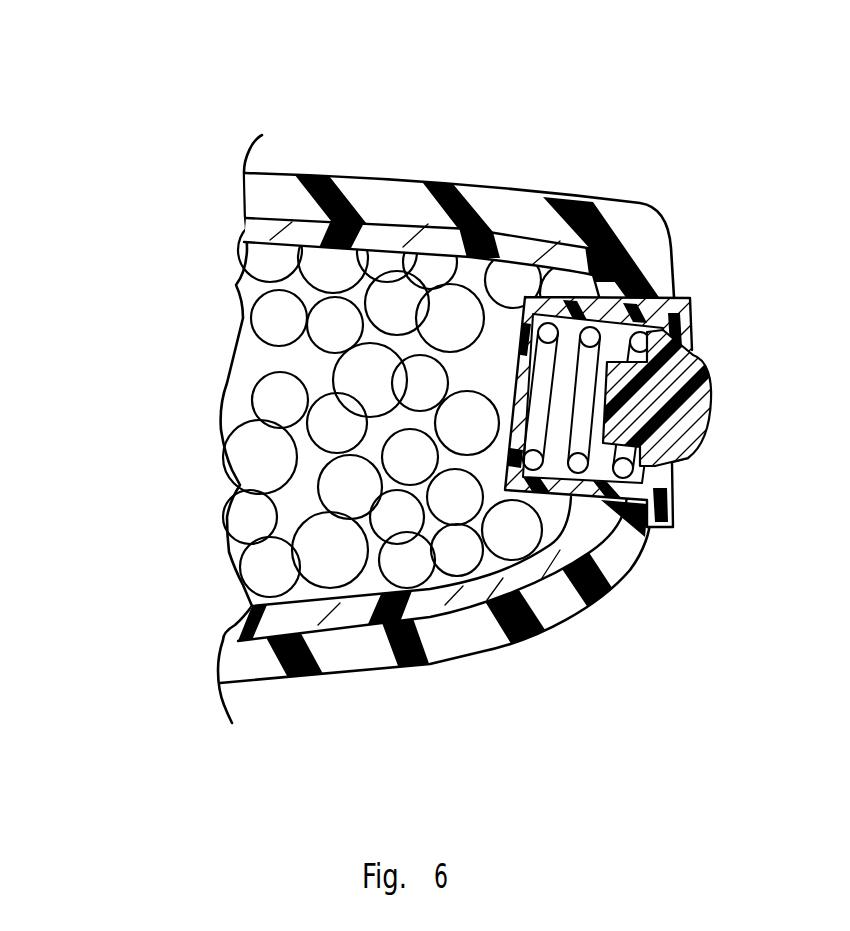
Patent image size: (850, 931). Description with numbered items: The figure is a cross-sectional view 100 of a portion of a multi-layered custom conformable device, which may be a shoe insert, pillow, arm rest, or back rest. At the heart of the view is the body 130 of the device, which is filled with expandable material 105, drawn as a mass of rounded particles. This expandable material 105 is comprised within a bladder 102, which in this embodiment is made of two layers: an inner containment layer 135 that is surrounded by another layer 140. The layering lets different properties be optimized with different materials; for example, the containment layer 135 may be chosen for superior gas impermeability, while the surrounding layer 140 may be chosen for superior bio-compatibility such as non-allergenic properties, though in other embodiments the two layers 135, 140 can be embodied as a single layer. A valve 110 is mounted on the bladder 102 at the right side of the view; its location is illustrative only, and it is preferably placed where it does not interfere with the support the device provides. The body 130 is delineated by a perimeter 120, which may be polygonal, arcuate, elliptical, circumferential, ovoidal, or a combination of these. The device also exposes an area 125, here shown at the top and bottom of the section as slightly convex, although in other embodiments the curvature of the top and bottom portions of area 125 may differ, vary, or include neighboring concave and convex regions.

The cross-sectional view 100 is at (430, 413).
The bladder 102 is at (428, 441).
The expandable material 105 is at (263, 312).
The valve 110 is at (700, 345).
The perimeter 120 is at (670, 242).
The area 125 is at (415, 170).
The body 130 is at (388, 429).
The containment layer 135 is at (520, 583).
The layer 140 is at (447, 638).